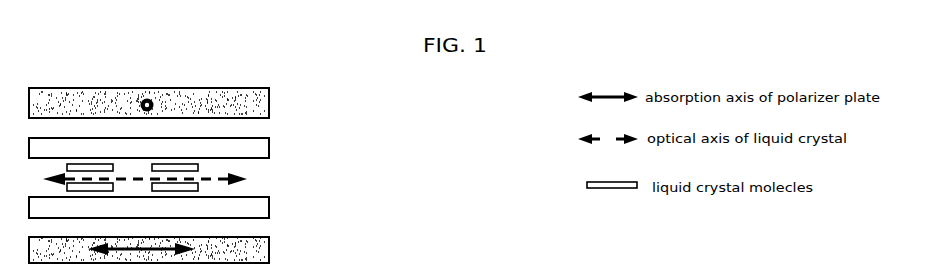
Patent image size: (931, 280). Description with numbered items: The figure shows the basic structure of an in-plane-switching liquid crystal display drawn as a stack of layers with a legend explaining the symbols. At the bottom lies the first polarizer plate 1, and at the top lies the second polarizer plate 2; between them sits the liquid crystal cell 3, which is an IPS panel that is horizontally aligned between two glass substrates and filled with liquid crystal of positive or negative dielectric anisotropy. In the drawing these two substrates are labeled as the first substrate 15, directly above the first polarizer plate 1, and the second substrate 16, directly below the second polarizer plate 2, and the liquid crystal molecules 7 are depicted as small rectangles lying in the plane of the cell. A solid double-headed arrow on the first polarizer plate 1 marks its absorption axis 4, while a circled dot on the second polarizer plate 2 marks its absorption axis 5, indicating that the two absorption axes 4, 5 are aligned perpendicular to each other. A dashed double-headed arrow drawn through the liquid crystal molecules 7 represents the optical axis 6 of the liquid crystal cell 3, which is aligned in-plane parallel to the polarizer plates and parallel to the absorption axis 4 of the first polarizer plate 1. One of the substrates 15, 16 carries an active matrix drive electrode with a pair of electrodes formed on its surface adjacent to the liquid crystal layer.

The first polarizer plate 1 is at (241, 250).
The second polarizer plate 2 is at (249, 103).
The liquid crystal cell 3 is at (305, 176).
The absorption axis of the first polarizer plate 4 is at (162, 251).
The absorption axis of the second polarizer plate 5 is at (189, 105).
The optical axis of the liquid crystal cell 6 is at (155, 179).
The liquid crystal molecules 7 is at (144, 176).
The first substrate 15 is at (226, 207).
The second substrate 16 is at (236, 147).